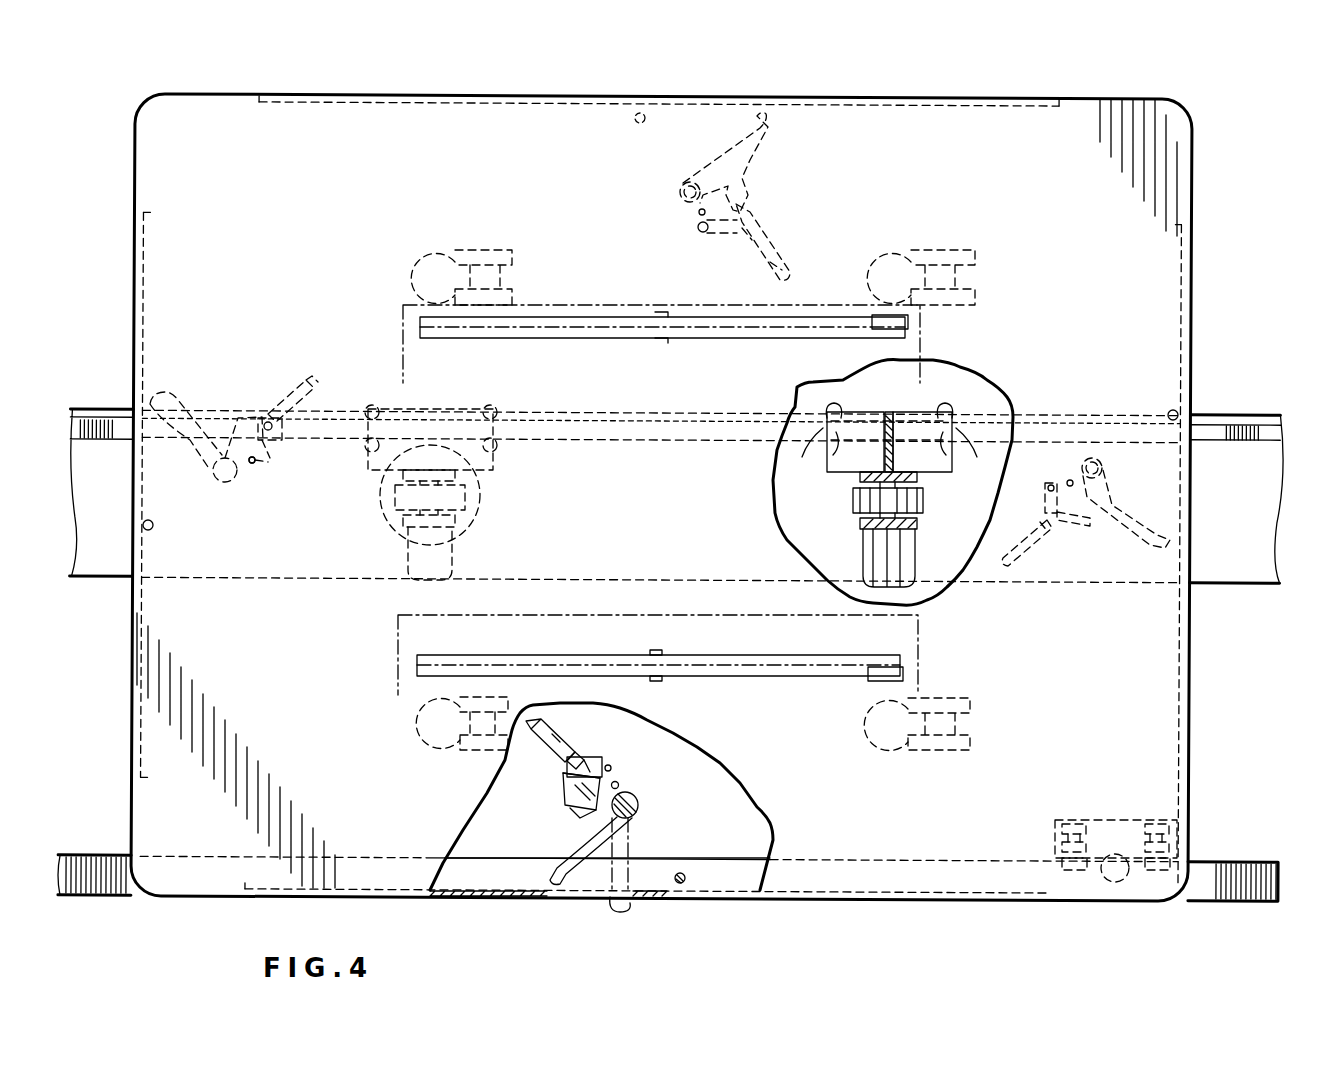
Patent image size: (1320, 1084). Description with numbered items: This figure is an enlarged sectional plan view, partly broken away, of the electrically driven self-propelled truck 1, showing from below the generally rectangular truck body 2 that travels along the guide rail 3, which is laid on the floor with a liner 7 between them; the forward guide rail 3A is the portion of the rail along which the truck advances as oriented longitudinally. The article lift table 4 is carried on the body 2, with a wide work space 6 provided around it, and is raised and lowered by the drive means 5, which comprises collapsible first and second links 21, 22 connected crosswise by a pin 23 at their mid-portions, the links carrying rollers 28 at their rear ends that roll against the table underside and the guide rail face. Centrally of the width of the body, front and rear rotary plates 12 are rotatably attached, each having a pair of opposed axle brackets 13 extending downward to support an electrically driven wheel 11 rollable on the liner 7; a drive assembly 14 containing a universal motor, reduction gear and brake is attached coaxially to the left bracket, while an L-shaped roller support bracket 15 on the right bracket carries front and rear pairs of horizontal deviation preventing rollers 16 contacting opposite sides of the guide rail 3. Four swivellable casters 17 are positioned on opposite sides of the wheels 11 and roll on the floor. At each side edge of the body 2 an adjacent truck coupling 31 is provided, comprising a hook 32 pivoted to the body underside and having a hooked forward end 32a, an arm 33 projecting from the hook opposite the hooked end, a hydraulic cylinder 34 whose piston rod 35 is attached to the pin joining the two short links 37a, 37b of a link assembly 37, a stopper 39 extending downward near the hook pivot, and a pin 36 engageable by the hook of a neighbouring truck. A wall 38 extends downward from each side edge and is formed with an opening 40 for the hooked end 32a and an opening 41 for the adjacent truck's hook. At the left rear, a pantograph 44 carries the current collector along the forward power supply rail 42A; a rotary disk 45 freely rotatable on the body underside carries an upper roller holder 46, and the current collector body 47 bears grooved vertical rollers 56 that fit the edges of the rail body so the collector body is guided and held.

The self-propelled truck 1 is at (1196, 193).
The truck body 2 is at (1162, 272).
The guide rail 3 is at (1216, 432).
The forward guide rail 3A is at (1256, 432).
The article lift table 4 is at (826, 690).
The drive means 5 is at (773, 678).
The work space 6 is at (1145, 657).
The liner 7 is at (1268, 490).
The electrically driven wheel 11 is at (395, 497).
The rotary plate 12 is at (388, 528).
The axle bracket 13 is at (472, 515).
The drive assembly 14 is at (455, 555).
The roller support bracket 15 is at (452, 409).
The horizontal deviation preventing roller 16 is at (365, 448).
The caster 17 is at (478, 262).
The first link 21 is at (722, 322).
The second link 22 is at (735, 330).
The pin 23 is at (663, 342).
The roller 28 is at (908, 322).
The adjacent truck coupling 31 is at (758, 157).
The hook 32 is at (635, 855).
The hooked forward end 32a is at (575, 900).
The arm 33 is at (572, 810).
The hydraulic cylinder 34 is at (566, 750).
The piston rod 35 is at (586, 765).
The pin 36 is at (682, 884).
The link assembly 37 is at (580, 782).
The short link 37a is at (572, 795).
The short link 37b is at (606, 766).
The wall 38 is at (465, 900).
The stopper 39 is at (620, 782).
The opening 40 is at (550, 898).
The opening 41 is at (740, 895).
The forward power supply rail 42A is at (1266, 860).
The pantograph 44 is at (1152, 820).
The rotary disk 45 is at (1112, 820).
The upper roller holder 46 is at (1172, 818).
The current collector body 47 is at (1062, 855).
The vertical roller 56 is at (1076, 872).